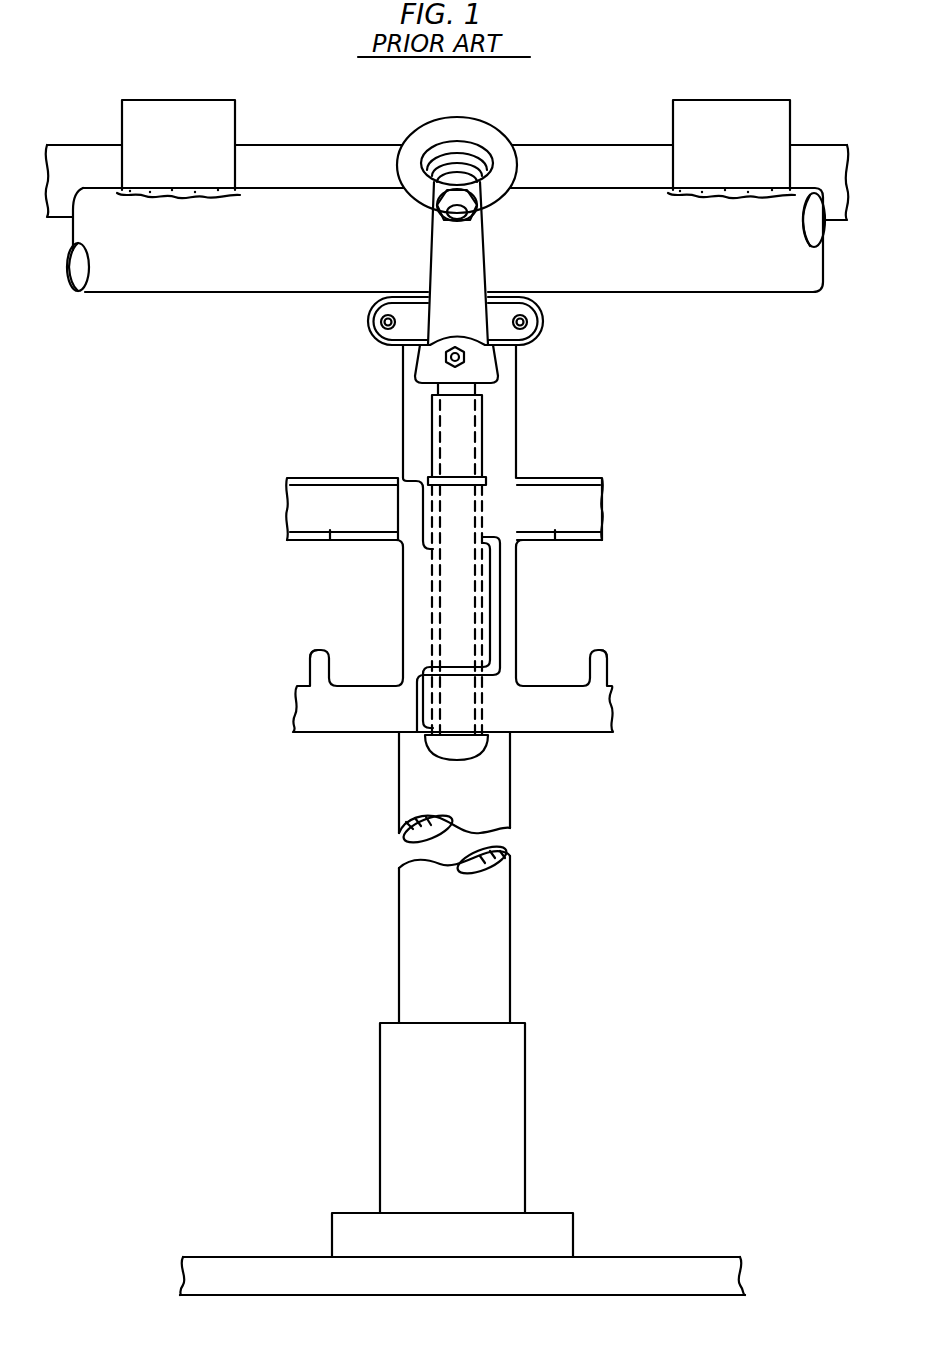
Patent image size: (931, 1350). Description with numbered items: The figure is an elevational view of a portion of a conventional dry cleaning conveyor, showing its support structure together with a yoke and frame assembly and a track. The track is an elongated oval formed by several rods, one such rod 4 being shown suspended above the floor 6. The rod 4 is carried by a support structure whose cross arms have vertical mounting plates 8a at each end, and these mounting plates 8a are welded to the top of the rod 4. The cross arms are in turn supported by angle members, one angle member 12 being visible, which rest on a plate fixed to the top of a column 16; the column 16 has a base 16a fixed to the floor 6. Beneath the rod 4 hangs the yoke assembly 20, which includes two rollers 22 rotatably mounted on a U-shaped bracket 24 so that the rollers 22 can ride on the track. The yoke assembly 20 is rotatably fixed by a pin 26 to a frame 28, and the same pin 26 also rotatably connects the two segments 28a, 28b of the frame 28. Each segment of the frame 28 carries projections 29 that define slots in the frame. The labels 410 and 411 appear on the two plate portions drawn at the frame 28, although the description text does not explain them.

The rod 4 is at (615, 295).
The floor 6 is at (640, 1257).
The vertical mounting plates 8a is at (233, 123).
The angle member 12 is at (597, 146).
The column 16 is at (510, 895).
The base 16a is at (537, 1212).
The yoke assembly 20 is at (413, 360).
The rollers 22 is at (456, 118).
The U-shaped bracket 24 is at (470, 258).
The pin 26 is at (470, 750).
The frame 28 is at (546, 479).
The frame segment 28a is at (555, 542).
The frame segment 28b is at (330, 542).
The projections 29 is at (318, 650).
The left plate 410 is at (342, 509).
The right plate 411 is at (560, 509).